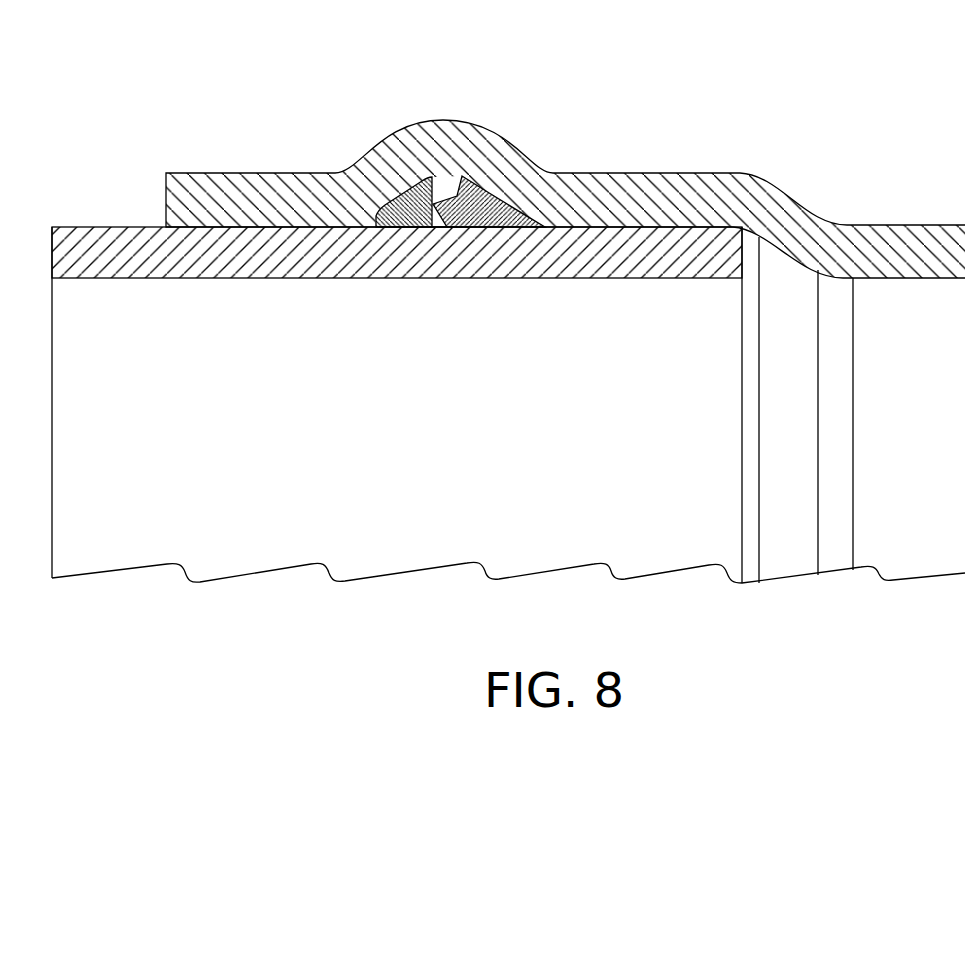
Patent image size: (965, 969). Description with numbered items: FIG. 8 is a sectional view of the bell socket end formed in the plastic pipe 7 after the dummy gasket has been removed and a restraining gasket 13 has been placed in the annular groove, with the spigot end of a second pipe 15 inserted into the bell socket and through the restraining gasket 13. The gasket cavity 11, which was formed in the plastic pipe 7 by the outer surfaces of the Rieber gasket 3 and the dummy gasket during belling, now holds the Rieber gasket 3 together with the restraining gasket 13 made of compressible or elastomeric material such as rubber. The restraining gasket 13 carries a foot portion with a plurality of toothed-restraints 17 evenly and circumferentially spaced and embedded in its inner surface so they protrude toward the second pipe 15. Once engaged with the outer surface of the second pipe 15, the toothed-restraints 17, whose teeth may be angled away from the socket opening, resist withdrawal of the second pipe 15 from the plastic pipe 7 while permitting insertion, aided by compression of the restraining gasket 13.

The Rieber gasket 3 is at (488, 181).
The plastic pipe 7 is at (892, 178).
The gasket cavity 11 is at (438, 109).
The restraining gasket 13 is at (402, 182).
The second pipe 15 is at (508, 405).
The toothed-restraints 17 is at (388, 238).